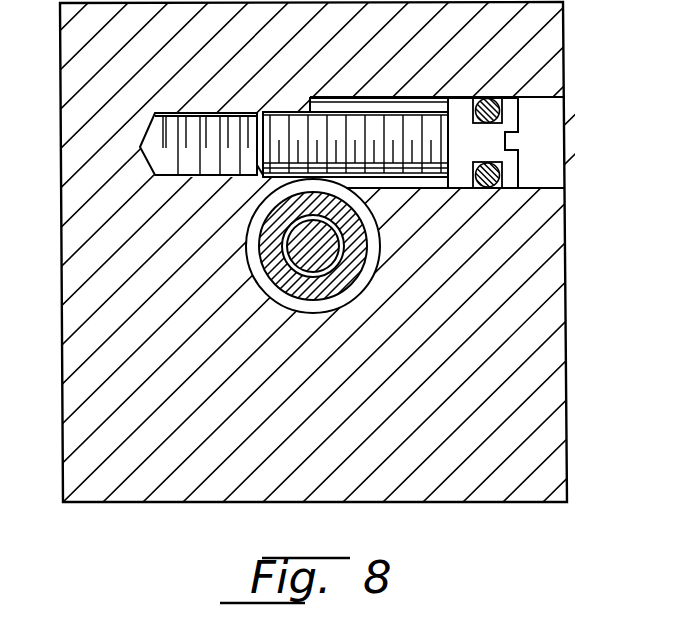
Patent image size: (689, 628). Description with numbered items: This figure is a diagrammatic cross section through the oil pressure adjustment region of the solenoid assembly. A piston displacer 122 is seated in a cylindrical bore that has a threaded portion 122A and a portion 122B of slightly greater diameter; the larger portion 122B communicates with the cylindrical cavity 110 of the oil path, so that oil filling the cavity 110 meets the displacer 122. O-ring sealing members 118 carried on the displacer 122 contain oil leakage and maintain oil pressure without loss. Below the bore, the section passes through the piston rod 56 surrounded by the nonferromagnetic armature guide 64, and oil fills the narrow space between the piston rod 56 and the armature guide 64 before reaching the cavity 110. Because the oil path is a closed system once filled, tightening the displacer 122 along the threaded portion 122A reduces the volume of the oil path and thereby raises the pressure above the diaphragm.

The threaded portion 122A is at (226, 113).
The portion of slightly greater diameter 122B is at (363, 100).
The piston displacer 122 is at (519, 124).
The o-ring sealing member 118 is at (489, 188).
The cylindrical cavity 110 is at (263, 284).
The armature guide 64 is at (263, 242).
The piston rod 56 is at (300, 254).